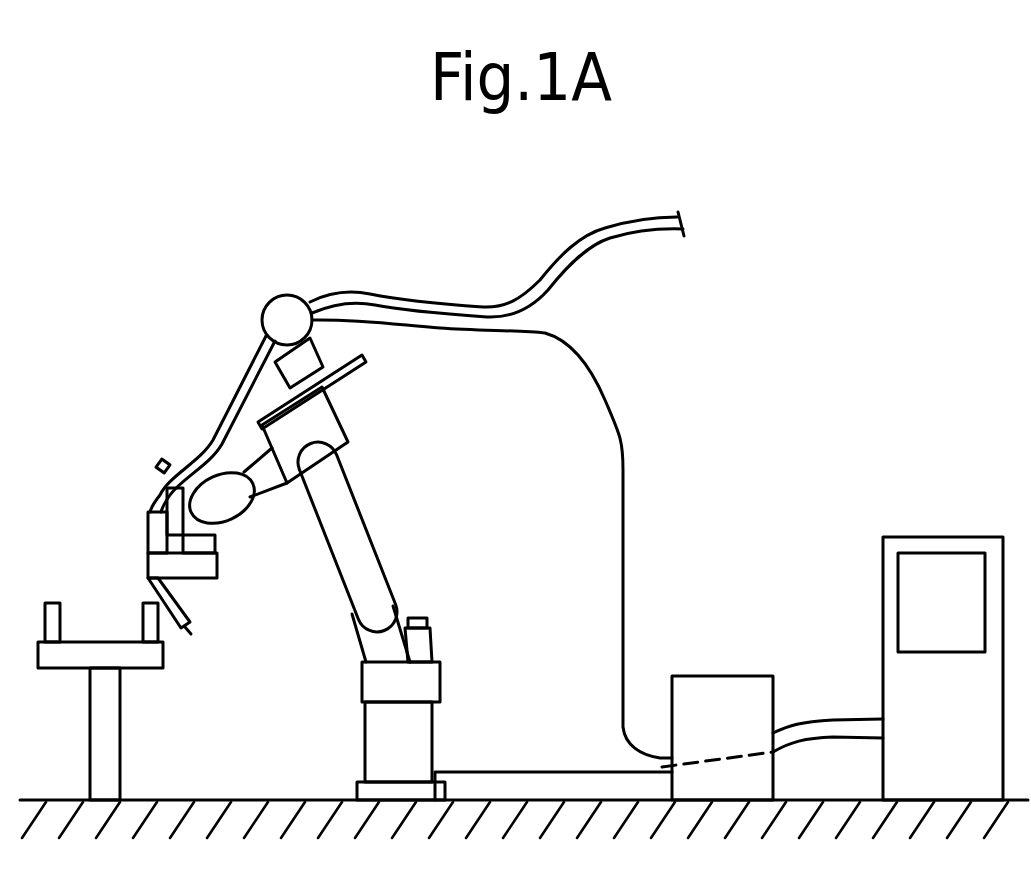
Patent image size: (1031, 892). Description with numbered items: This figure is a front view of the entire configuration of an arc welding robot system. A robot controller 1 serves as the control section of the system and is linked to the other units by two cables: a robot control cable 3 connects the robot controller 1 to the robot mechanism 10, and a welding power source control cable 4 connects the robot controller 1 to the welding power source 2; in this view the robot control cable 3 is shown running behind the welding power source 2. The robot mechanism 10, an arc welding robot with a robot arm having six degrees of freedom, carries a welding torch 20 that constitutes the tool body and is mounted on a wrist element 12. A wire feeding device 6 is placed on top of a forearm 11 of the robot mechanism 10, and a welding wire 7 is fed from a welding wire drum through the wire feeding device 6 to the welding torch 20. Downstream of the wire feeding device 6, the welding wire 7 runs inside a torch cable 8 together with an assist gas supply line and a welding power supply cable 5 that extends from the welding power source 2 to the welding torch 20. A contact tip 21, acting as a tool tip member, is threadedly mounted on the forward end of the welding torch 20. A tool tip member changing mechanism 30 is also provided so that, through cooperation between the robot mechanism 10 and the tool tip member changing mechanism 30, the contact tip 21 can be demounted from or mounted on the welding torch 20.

The robot controller 1 is at (982, 537).
The welding power source 2 is at (725, 690).
The robot control cable 3 is at (543, 768).
The welding power source control cable 4 is at (857, 717).
The welding power supply cable 5 is at (625, 458).
The wire feeding device 6 is at (287, 303).
The welding wire 7 is at (628, 222).
The torch cable 8 is at (198, 443).
The robot mechanism 10 is at (350, 483).
The forearm 11 is at (263, 483).
The wrist element 12 is at (217, 522).
The welding torch 20 is at (148, 537).
The contact tip 21 is at (192, 630).
The tool tip member changing mechanism 30 is at (100, 620).